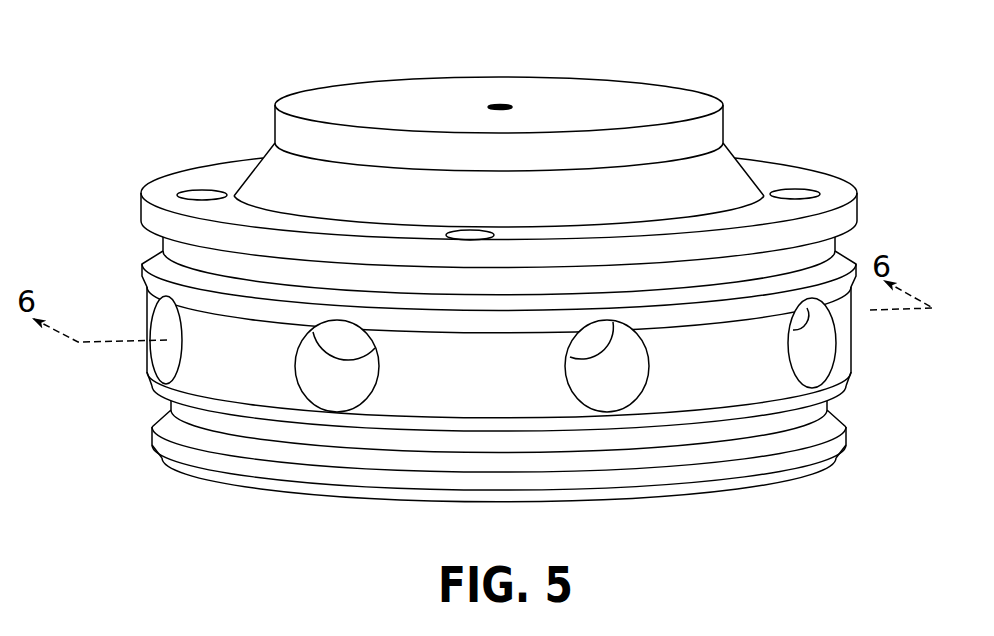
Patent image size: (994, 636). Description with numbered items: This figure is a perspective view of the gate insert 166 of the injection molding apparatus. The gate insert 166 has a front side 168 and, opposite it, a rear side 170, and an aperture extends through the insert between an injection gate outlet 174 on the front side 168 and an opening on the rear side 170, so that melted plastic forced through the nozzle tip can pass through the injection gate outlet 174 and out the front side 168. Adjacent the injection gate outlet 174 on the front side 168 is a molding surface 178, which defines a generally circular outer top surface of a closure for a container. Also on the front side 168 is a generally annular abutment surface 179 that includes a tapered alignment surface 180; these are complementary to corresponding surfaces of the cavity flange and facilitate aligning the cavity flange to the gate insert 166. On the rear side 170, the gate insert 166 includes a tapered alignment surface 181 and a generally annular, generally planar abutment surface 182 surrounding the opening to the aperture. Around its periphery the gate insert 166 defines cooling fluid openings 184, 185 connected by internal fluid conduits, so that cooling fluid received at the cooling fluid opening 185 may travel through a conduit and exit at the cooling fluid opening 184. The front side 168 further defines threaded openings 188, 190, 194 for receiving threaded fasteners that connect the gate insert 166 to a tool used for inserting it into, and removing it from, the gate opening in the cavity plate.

The gate insert 166 is at (365, 107).
The front side 168 is at (463, 64).
The injection gate outlet 174 is at (501, 92).
The molding surface 178 is at (627, 105).
The tapered alignment surface 180 is at (573, 192).
The abutment surface 179 is at (772, 173).
The threaded opening 190 is at (199, 187).
The threaded opening 194 is at (796, 187).
The threaded opening 188 is at (468, 225).
The rear side 170 is at (671, 519).
The tapered alignment surface 181 is at (800, 475).
The abutment surface 182 is at (760, 492).
The cooling fluid opening 184 is at (160, 357).
The cooling fluid opening 185 is at (330, 386).